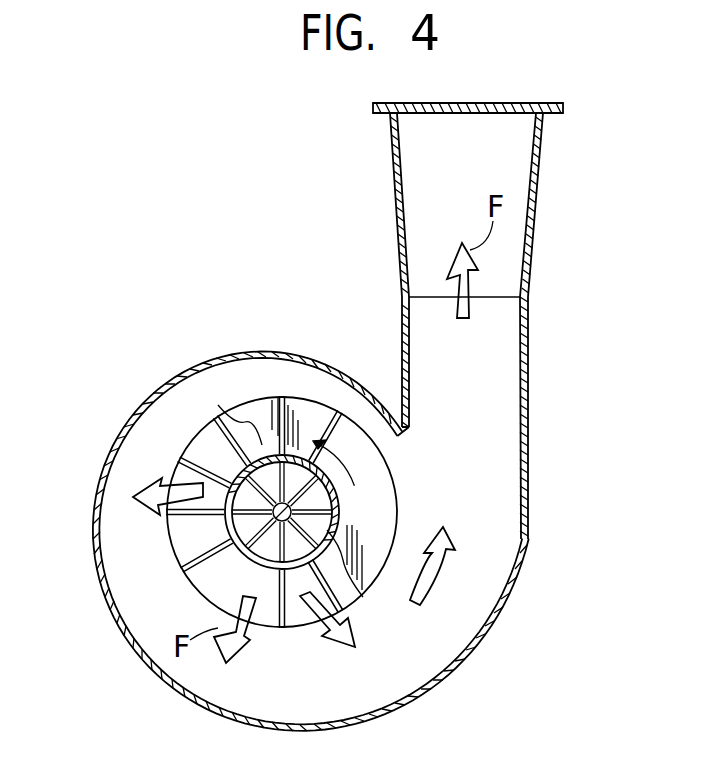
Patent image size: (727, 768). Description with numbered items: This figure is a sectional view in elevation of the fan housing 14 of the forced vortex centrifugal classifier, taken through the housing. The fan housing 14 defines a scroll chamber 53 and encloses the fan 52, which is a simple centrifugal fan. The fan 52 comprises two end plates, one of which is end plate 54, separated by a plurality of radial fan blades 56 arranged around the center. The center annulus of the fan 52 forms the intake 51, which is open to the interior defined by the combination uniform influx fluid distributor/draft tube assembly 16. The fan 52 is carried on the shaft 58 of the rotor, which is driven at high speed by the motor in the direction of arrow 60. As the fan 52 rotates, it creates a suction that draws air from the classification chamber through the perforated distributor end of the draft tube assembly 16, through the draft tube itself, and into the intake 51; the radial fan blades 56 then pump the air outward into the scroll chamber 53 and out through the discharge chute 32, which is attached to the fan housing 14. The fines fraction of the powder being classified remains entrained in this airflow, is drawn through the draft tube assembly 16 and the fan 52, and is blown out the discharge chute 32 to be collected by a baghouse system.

The fan housing 14 is at (531, 431).
The discharge chute 32 is at (540, 163).
The combination uniform influx fluid distributor/draft tube assembly 16 is at (240, 468).
The arrow 60 is at (347, 485).
The shaft 58 is at (345, 520).
The fan 52 is at (166, 544).
The intake 51 is at (195, 585).
The scroll chamber 53 is at (152, 622).
The radial fan blades 56 is at (288, 620).
The end plate 54 is at (350, 592).